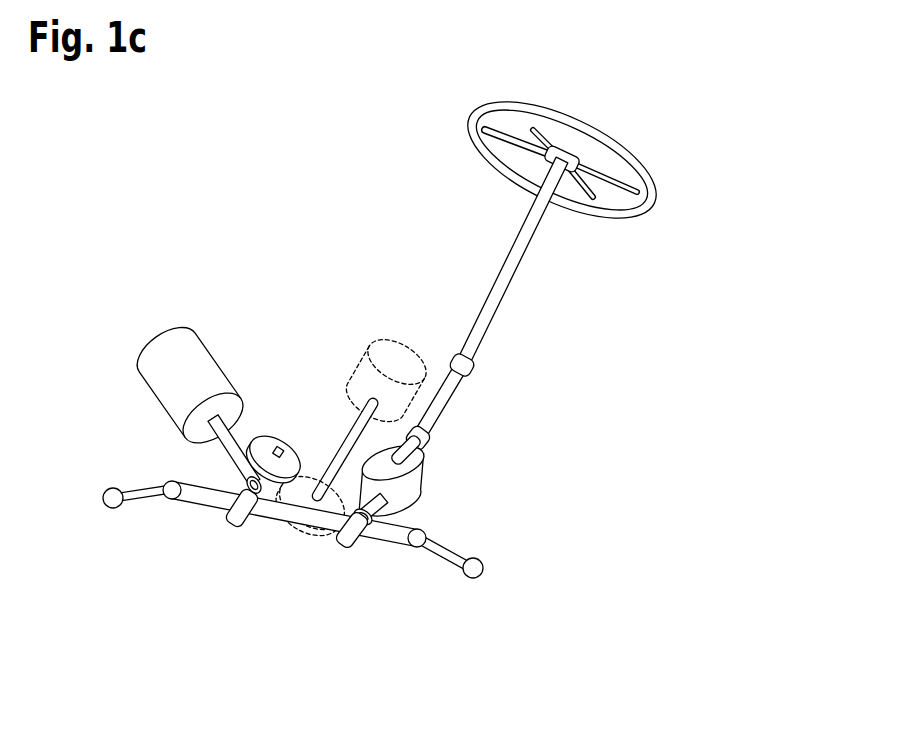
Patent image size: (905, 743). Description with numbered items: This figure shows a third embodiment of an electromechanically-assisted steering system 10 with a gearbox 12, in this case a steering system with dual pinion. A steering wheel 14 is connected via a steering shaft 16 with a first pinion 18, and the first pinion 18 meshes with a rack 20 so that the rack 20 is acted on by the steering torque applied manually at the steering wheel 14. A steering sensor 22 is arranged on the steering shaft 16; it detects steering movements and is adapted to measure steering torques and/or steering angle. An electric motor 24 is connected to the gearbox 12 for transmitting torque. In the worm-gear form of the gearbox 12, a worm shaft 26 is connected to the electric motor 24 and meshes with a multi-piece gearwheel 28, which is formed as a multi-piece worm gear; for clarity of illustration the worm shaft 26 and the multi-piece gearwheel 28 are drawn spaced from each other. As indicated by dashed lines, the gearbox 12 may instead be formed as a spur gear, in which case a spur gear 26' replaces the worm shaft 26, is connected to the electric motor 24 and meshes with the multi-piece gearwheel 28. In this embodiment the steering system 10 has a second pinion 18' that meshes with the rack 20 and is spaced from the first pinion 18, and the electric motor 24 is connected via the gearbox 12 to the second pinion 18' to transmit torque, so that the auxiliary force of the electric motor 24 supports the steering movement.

The steering system 10 is at (290, 182).
The gearbox 12 is at (280, 425).
The steering wheel 14 is at (648, 192).
The steering shaft 16 is at (446, 396).
The first pinion 18 is at (341, 580).
The second pinion 18' is at (220, 568).
The rack 20 is at (203, 494).
The steering sensor 22 is at (400, 488).
The electric motor 24 is at (397, 360).
The worm shaft 26 is at (186, 455).
The spur gear 26' is at (336, 404).
The multi-piece gearwheel 28 is at (281, 483).